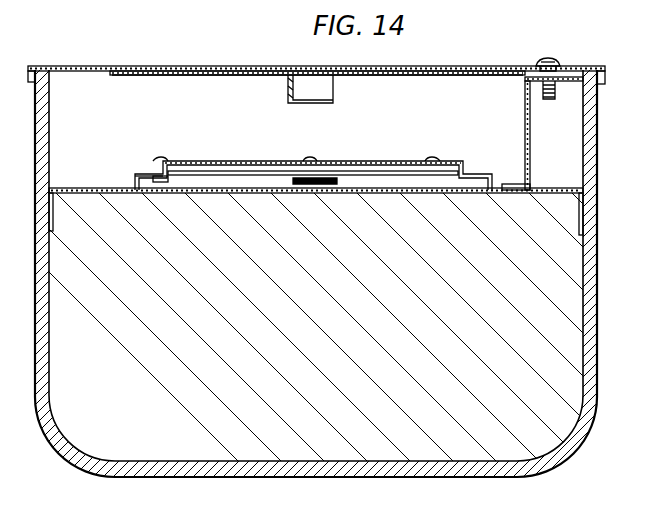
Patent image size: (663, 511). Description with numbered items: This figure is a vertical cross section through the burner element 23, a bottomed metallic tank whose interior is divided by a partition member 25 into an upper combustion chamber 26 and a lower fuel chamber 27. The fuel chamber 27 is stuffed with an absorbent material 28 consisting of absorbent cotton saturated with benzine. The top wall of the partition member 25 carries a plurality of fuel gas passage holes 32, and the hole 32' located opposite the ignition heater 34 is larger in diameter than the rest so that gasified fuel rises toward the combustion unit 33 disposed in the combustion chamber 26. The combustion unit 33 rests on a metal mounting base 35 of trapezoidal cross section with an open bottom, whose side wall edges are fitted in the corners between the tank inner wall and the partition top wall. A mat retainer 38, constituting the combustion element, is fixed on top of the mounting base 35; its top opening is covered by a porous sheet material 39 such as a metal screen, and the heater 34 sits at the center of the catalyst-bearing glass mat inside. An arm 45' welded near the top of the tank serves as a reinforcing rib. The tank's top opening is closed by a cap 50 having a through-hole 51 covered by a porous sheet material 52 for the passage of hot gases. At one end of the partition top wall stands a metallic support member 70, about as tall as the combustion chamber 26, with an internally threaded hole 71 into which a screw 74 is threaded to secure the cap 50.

The burner element 23 is at (633, 265).
The partition member 25 is at (103, 190).
The combustion chamber 26 is at (116, 92).
The fuel chamber 27 is at (568, 296).
The absorbent material 28 is at (560, 333).
The fuel gas passage holes 32 is at (313, 194).
The fuel gas passage hole 32' is at (323, 203).
The combustion unit 33 is at (432, 161).
The ignition heater 34 is at (294, 184).
The mounting base 35 is at (146, 173).
The mat retainer 38 is at (165, 161).
The porous sheet material 39 is at (372, 161).
The arm 45' is at (285, 94).
The cap 50 is at (506, 66).
The through-hole 51 is at (190, 70).
The porous sheet material 52 is at (197, 76).
The support member 70 is at (525, 114).
The internally threaded hole 71 is at (559, 86).
The screw 74 is at (545, 63).